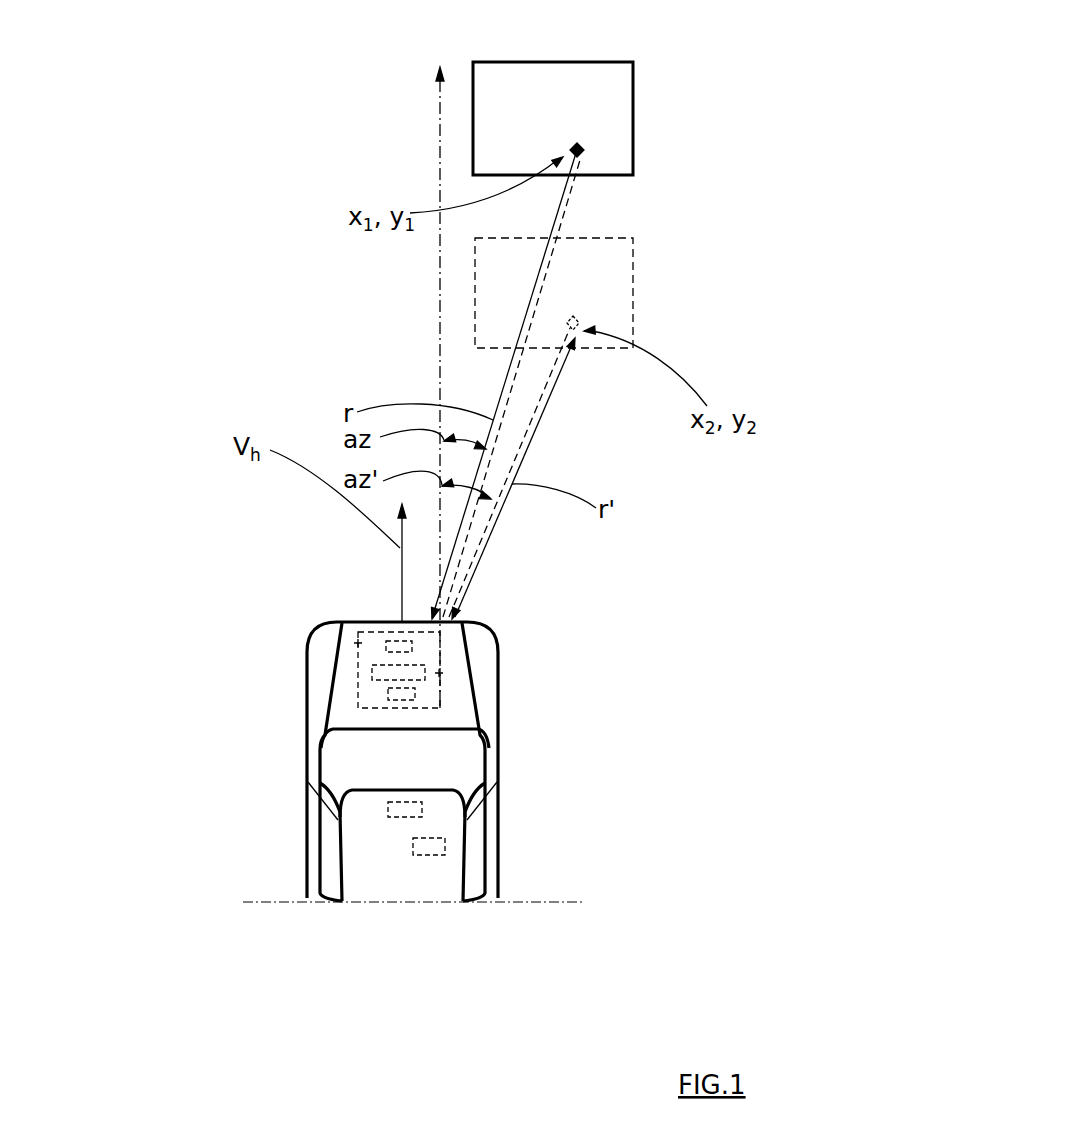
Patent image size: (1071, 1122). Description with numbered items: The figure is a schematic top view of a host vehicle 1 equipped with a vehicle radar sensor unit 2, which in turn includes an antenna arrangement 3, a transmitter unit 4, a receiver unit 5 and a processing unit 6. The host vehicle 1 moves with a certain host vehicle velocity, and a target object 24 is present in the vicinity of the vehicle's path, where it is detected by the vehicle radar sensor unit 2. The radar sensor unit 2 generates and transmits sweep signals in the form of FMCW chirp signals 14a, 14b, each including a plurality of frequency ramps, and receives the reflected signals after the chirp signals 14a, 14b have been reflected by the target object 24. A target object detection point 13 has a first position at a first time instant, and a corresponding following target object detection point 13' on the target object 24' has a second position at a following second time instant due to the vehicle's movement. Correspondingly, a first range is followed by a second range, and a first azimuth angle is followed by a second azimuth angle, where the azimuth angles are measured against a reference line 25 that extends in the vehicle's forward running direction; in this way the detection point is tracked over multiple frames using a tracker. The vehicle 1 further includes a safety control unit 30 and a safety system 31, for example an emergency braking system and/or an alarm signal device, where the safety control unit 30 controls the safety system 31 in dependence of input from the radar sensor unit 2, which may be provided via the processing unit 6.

The host vehicle 1 is at (380, 865).
The vehicle radar sensor unit 2 is at (440, 640).
The antenna arrangement 3 is at (386, 645).
The transmitter unit 4 is at (372, 672).
The receiver unit 5 is at (440, 673).
The processing unit 6 is at (388, 694).
The target object detection point 13 is at (638, 123).
The following target object detection point 13' is at (645, 292).
The FMCW chirp signal 14a is at (496, 394).
The FMCW chirp signal 14b is at (536, 386).
The target object 24 is at (591, 89).
The target object 24' is at (610, 256).
The reference line 25 is at (432, 287).
The safety control unit 30 is at (422, 809).
The safety system 31 is at (445, 846).